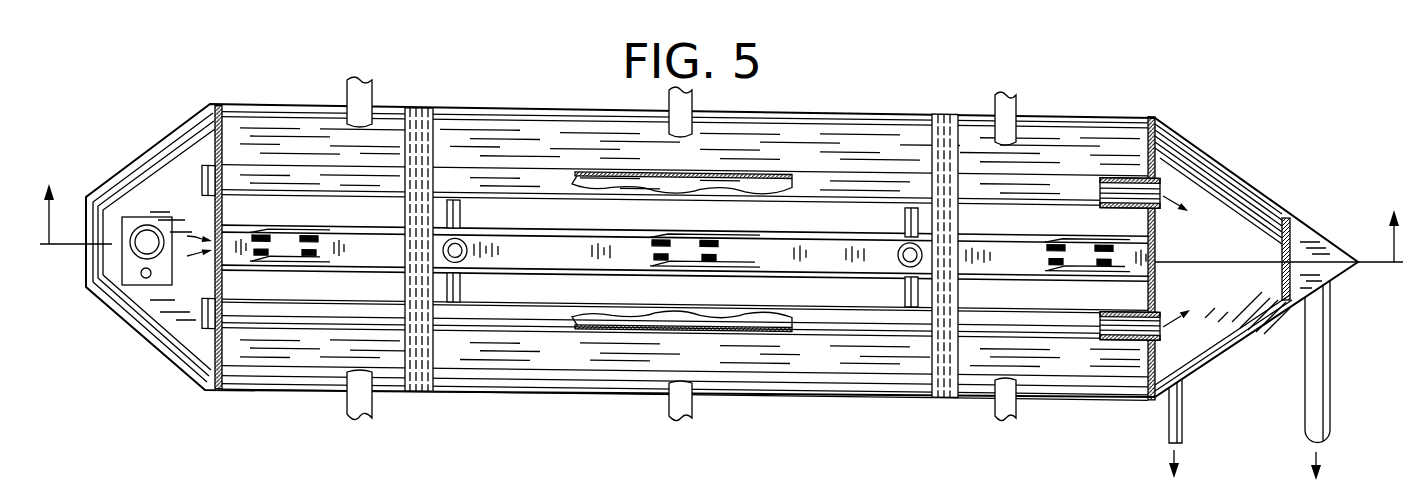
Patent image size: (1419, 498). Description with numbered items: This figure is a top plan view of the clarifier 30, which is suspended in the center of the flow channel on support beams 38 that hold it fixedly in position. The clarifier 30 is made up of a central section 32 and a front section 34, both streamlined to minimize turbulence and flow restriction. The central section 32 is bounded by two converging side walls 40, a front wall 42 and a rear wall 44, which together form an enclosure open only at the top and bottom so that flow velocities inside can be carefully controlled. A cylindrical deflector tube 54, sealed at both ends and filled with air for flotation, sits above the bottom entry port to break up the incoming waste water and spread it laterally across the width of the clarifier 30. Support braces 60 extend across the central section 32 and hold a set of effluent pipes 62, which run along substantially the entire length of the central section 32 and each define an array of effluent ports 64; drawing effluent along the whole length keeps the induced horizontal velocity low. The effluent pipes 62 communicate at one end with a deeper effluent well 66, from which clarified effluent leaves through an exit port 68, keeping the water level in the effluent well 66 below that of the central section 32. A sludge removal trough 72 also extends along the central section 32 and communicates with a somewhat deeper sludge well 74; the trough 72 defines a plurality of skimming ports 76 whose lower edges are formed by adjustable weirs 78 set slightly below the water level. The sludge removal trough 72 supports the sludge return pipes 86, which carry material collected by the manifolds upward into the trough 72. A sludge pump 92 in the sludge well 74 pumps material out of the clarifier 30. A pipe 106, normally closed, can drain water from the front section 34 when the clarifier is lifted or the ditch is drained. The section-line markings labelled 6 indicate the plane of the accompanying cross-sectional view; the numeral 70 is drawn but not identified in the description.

The clarifier 30 is at (556, 100).
The central section 32 is at (604, 404).
The front section 34 is at (1290, 196).
The support beams 38 is at (347, 94).
The side walls 40 is at (760, 393).
The front wall 42 is at (1155, 262).
The rear wall 44 is at (230, 140).
The cylindrical deflector tube 54 is at (1235, 350).
The support braces 60 is at (428, 150).
The effluent pipes 62 is at (850, 185).
The effluent ports 64 is at (608, 143).
The effluent well 66 is at (1207, 180).
The exit port 68 is at (1300, 268).
The leg 70 is at (1318, 360).
The sludge removal trough 72 is at (595, 262).
The sludge well 74 is at (138, 312).
The skimming ports 76 is at (288, 230).
The adjustable weirs 78 is at (330, 235).
The sludge return pipes 86 is at (464, 242).
The sludge pump 92 is at (137, 218).
The pipe 106 is at (1168, 415).
The section line 6- 6 is at (722, 242).